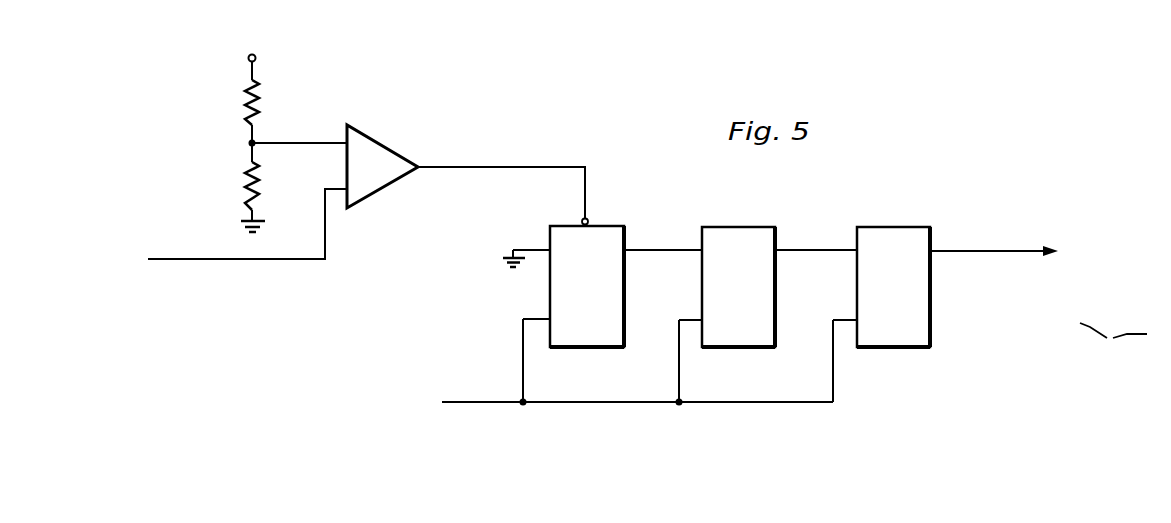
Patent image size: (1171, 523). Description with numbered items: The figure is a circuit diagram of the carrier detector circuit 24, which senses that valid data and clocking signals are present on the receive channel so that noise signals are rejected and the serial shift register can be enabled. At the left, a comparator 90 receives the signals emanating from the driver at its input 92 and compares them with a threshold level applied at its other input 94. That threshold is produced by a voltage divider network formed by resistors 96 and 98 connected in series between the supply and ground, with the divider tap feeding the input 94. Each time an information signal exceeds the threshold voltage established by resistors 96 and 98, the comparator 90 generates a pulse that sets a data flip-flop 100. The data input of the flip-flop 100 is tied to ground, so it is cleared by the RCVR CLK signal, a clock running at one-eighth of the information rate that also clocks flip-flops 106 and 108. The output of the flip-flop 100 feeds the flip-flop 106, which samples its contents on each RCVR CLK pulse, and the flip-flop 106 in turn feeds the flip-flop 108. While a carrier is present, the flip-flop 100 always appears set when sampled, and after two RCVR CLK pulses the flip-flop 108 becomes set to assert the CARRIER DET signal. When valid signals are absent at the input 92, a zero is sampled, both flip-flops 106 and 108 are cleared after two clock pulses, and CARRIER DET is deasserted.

The carrier detector circuit 24 is at (619, 239).
The comparator 90 is at (380, 140).
The comparator input 92 is at (262, 260).
The comparator input 94 is at (287, 143).
The resistor 96 is at (245, 93).
The resistor 98 is at (243, 178).
The data flip-flop 100 is at (605, 226).
The flip-flop 106 is at (733, 227).
The flip-flop 108 is at (883, 227).